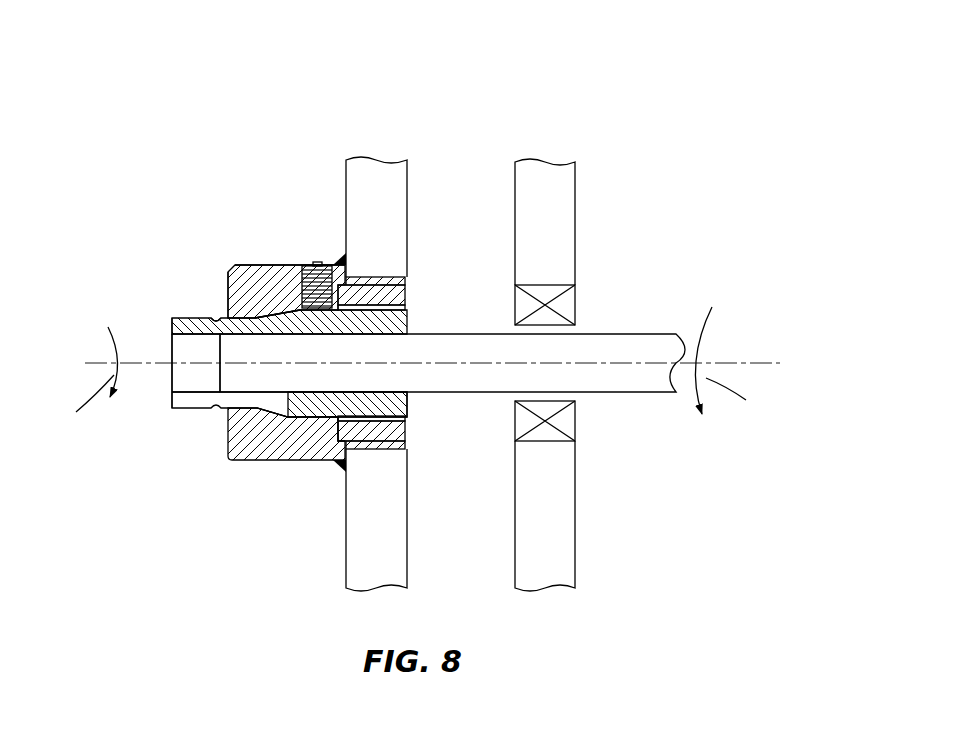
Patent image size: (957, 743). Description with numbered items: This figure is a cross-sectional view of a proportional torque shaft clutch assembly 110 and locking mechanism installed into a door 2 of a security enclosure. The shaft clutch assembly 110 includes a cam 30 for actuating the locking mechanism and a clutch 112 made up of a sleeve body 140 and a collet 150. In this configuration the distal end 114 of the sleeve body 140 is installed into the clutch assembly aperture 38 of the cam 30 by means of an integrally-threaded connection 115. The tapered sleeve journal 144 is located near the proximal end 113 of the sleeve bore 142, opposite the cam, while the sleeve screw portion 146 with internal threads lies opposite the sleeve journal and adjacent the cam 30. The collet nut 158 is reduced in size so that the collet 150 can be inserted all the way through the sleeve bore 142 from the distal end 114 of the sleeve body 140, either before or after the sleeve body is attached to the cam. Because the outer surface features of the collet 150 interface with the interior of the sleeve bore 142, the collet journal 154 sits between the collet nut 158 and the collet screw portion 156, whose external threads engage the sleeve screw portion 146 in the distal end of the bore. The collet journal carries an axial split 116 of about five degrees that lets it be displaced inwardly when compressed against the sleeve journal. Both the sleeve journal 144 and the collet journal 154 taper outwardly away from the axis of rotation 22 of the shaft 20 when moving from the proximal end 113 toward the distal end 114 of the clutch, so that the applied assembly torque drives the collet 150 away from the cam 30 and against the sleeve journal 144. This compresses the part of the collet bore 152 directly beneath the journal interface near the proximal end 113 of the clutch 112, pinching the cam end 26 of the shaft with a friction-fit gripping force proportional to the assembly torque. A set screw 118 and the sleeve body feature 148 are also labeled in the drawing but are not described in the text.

The proportional torque shaft clutch assembly 110 is at (158, 97).
The clutch 112 is at (95, 466).
The proximal end 113 is at (70, 309).
The distal end 114 is at (417, 330).
The integrally-threaded connection 115 is at (378, 450).
The axial split 116 is at (264, 420).
The set screw 118 is at (323, 265).
The sleeve body 140 is at (258, 375).
The sleeve bore 142 is at (318, 440).
The sleeve journal 144 is at (226, 272).
The sleeve screw portion 146 is at (386, 297).
The nut body 148 is at (288, 272).
The collet 150 is at (290, 372).
The collet bore 152 is at (169, 346).
The collet journal 154 is at (283, 335).
The collet screw portion 156 is at (394, 319).
The collet nut 158 is at (213, 317).
The door 2 is at (577, 200).
The shaft 20 is at (478, 394).
The axis of rotation 22 is at (746, 361).
The cam end 26 is at (196, 363).
The cam 30 is at (409, 354).
The clutch assembly aperture 38 is at (364, 277).